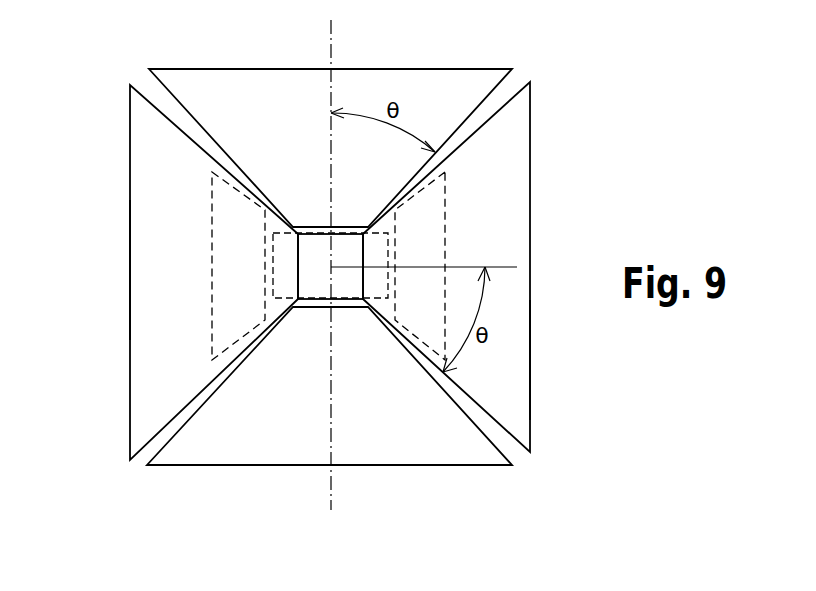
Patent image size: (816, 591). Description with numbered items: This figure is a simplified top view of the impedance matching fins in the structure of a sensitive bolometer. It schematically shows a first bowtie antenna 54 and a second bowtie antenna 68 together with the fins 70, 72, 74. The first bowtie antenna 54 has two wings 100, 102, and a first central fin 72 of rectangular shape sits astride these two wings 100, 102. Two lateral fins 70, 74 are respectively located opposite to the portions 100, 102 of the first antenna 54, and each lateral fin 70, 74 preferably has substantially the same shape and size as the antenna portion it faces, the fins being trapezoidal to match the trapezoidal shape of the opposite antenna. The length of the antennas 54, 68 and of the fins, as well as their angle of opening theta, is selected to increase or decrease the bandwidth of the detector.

The first bowtie antenna 54 is at (130, 155).
The second bowtie antenna 68 is at (252, 95).
The lateral fin 70 is at (223, 262).
The first central fin 72 is at (282, 243).
The lateral fin 74 is at (435, 222).
The wing of the bowtie antenna 100 is at (162, 316).
The wing of the bowtie antenna 102 is at (493, 358).